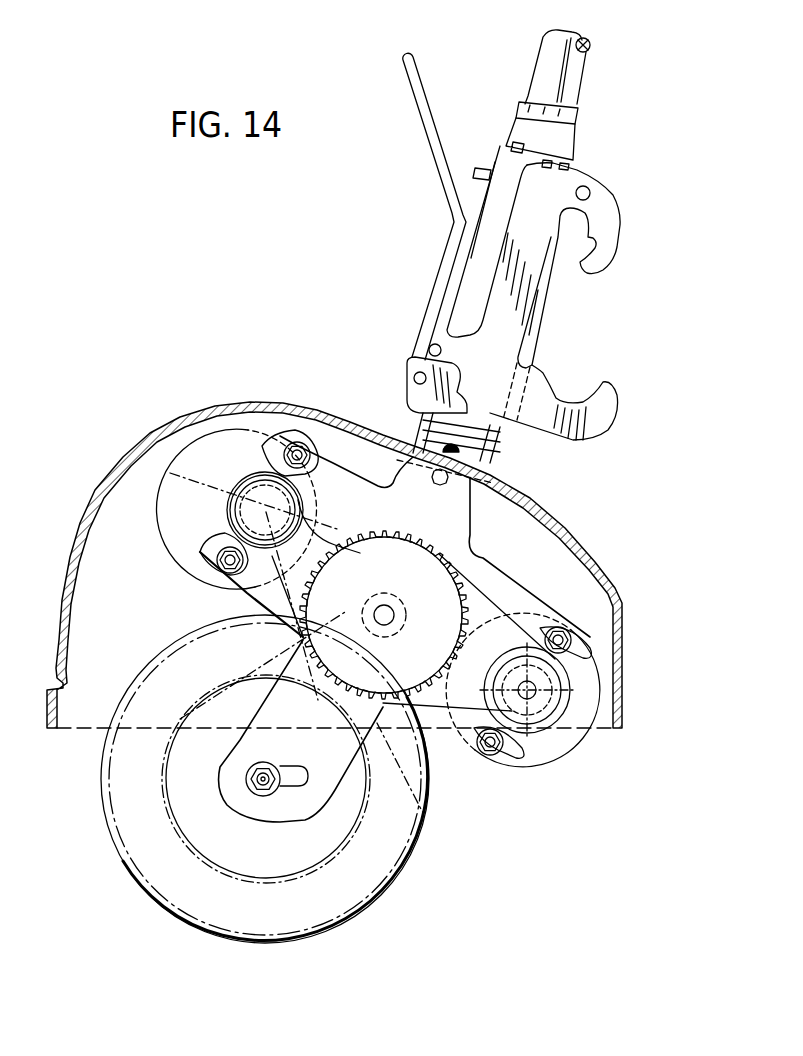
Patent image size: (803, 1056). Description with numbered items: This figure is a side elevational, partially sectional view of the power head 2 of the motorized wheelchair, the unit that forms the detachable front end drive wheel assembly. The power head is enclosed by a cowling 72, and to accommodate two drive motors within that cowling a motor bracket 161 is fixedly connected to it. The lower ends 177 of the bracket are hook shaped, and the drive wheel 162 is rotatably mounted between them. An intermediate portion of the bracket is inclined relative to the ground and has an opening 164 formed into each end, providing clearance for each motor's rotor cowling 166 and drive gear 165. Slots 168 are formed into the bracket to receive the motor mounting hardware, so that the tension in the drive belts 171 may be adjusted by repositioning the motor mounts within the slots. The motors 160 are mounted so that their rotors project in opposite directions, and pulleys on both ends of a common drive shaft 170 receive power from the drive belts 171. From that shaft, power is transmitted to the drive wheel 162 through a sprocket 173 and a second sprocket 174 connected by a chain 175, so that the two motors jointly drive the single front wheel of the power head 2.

The power head 2 is at (548, 490).
The cowling 72 is at (616, 580).
The motors 160 is at (194, 556).
The motor bracket 161 is at (472, 550).
The drive wheel 162 is at (388, 880).
The opening 164 is at (322, 551).
The drive gear 165 is at (247, 500).
The rotor cowling 166 is at (238, 505).
The slots 168 is at (266, 442).
The common drive shaft 170 is at (388, 610).
The drive belts 171 is at (340, 530).
The sprocket 173 is at (396, 628).
The sprocket 174 is at (276, 882).
The chain 175 is at (410, 797).
The lower ends 177 is at (302, 822).